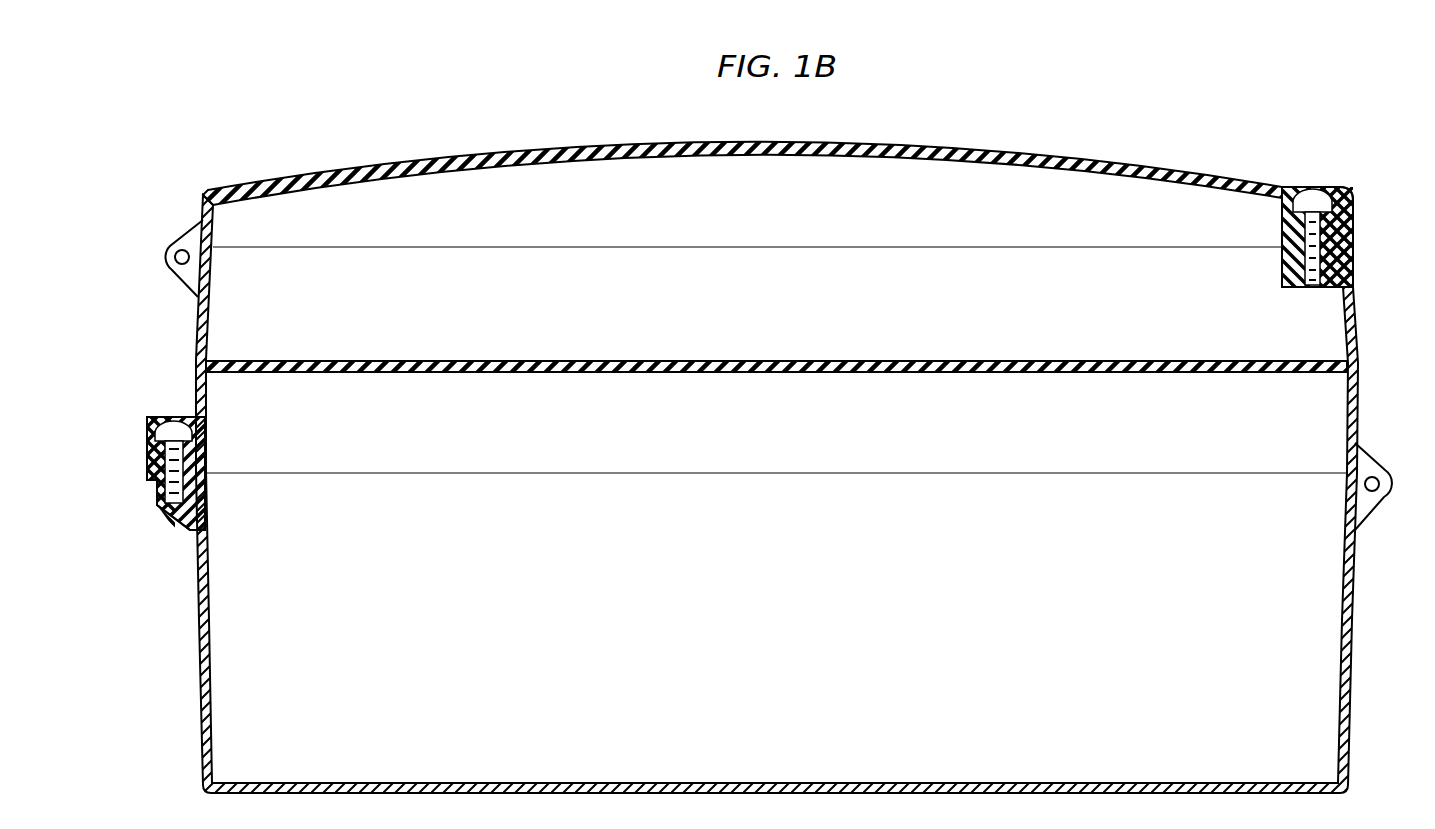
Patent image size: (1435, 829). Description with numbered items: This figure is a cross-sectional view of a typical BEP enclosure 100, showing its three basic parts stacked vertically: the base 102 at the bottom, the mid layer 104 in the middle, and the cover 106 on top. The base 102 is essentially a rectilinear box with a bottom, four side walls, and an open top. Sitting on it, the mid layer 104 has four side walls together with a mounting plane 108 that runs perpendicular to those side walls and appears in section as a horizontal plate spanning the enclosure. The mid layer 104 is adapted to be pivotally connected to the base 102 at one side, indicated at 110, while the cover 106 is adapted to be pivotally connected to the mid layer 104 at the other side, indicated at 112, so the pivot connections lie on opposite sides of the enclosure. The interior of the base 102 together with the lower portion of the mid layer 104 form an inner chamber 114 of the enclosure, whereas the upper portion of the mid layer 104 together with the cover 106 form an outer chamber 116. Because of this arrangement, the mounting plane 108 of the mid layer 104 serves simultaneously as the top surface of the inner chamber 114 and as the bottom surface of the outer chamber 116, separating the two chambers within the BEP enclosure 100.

The BEP enclosure 100 is at (1238, 135).
The base 102 is at (1348, 729).
The mid layer 104 is at (1357, 410).
The cover 106 is at (1353, 236).
The mounting plane 108 is at (1308, 362).
The pivotal connection side between mid layer and base 110 is at (1386, 500).
The pivotal connection side between cover and mid layer 112 is at (172, 270).
The inner chamber 114 is at (781, 659).
The outer chamber 116 is at (781, 332).